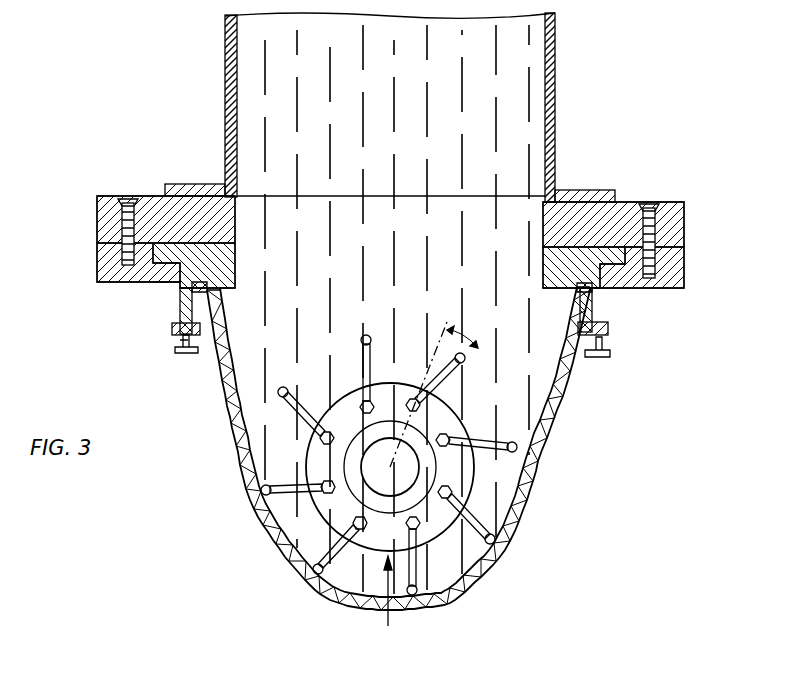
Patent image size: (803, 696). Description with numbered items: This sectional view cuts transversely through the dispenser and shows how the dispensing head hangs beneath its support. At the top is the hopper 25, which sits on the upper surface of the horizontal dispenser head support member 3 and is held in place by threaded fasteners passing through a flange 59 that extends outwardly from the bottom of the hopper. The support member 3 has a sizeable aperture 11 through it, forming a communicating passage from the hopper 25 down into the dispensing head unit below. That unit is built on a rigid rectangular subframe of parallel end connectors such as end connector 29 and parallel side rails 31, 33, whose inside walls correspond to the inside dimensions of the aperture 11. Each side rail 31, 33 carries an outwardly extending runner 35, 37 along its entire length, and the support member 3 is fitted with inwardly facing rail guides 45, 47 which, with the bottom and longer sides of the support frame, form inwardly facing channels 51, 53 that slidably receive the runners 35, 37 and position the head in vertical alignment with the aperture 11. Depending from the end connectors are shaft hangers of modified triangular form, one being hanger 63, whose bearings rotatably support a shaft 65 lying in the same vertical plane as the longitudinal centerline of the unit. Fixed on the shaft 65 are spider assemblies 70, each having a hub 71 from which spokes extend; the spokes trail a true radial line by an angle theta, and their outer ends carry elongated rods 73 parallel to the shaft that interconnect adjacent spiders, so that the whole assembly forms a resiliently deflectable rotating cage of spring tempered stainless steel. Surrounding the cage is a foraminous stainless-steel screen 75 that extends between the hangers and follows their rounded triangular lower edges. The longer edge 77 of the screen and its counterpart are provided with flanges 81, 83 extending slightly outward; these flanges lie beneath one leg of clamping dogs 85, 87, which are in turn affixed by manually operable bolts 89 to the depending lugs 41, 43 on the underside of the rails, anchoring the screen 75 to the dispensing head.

The dispenser head support member 3 is at (625, 203).
The aperture 11 is at (545, 235).
The hopper 25 is at (556, 86).
The end connector 29 is at (325, 282).
The side rail 31 is at (238, 266).
The side rail 33 is at (543, 264).
The rail runner 35 is at (684, 250).
The rail runner 37 is at (162, 268).
The depending ear 41 is at (177, 324).
The depending ear 43 is at (606, 328).
The rail guide 45 is at (126, 282).
The rail guide 47 is at (684, 278).
The channel 51 is at (97, 262).
The channel 53 is at (600, 290).
The flange 59 is at (212, 184).
The shaft hanger 63 is at (420, 332).
The shaft 65 is at (384, 488).
The spider assembly 70 is at (381, 604).
The hub 71 is at (310, 412).
The elongated rod 73 is at (279, 390).
The screen 75 is at (462, 600).
The longer edge of screen 77 is at (210, 323).
The flange 81 is at (207, 296).
The flange 83 is at (580, 300).
The clamping dog 85 is at (585, 340).
The clamping dog 87 is at (190, 354).
The bolt 89 is at (184, 354).